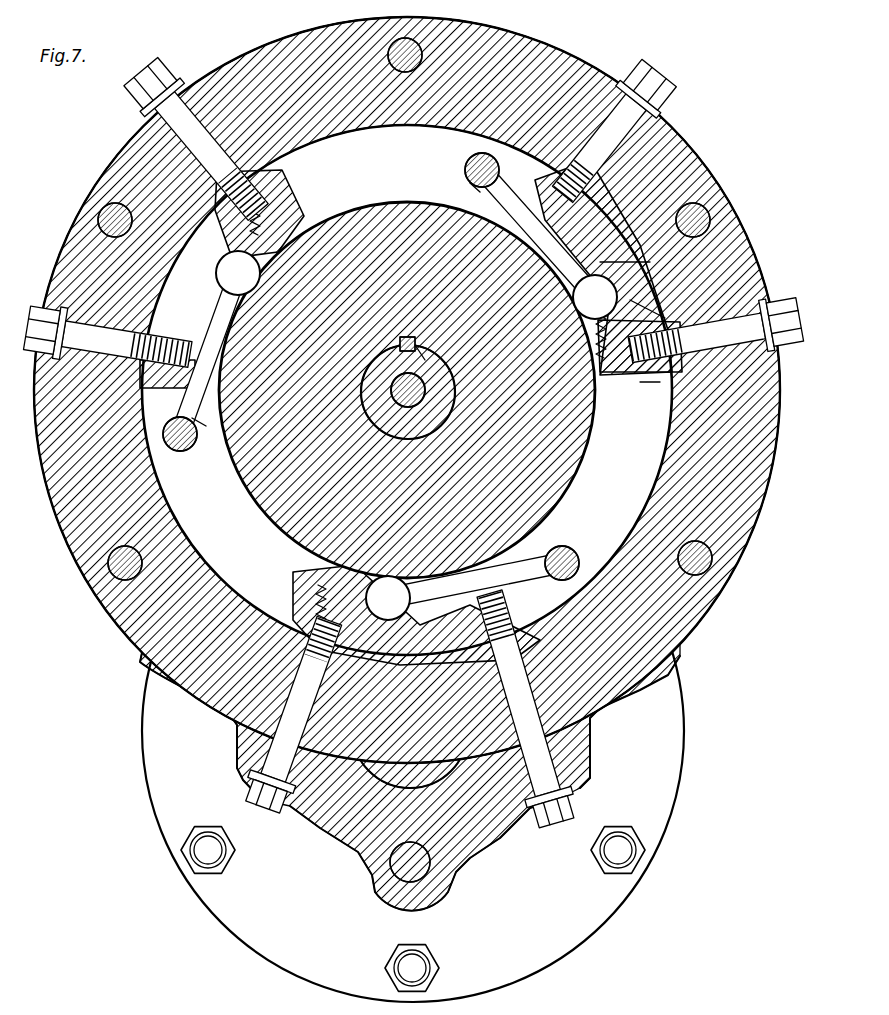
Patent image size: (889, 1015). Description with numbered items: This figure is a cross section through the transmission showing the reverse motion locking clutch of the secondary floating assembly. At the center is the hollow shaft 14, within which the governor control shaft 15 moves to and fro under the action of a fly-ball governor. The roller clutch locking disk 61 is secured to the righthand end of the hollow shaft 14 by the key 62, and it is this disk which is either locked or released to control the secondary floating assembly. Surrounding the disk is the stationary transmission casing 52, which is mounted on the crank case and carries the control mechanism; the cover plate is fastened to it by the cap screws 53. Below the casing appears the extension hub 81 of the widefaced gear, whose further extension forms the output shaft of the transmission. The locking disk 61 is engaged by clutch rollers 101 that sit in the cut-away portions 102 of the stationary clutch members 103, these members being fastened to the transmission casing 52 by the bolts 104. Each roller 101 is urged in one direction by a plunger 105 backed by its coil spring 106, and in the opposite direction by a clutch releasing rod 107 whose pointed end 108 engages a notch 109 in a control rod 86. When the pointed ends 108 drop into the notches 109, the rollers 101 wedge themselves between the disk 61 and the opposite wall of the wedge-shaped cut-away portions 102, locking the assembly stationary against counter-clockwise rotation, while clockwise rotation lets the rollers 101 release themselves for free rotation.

The hollow shaft 14 is at (437, 362).
The governor control shaft 15 is at (428, 352).
The transmission casing 52 is at (132, 622).
The cap screws 53 is at (90, 582).
The roller clutch locking disk 61 is at (262, 485).
The key 62 is at (412, 345).
The extension hub 81 is at (495, 835).
The control rods 86 is at (182, 452).
The clutch rollers 101 is at (625, 262).
The cut-away portions 102 is at (605, 215).
The stationary clutch members 103 is at (305, 222).
The bolts 104 is at (640, 122).
The plungers 105 is at (650, 300).
The coil springs 106 is at (650, 385).
The clutch releasing rods 107 is at (482, 190).
The pointed ends 108 is at (497, 181).
The notches 109 is at (497, 170).